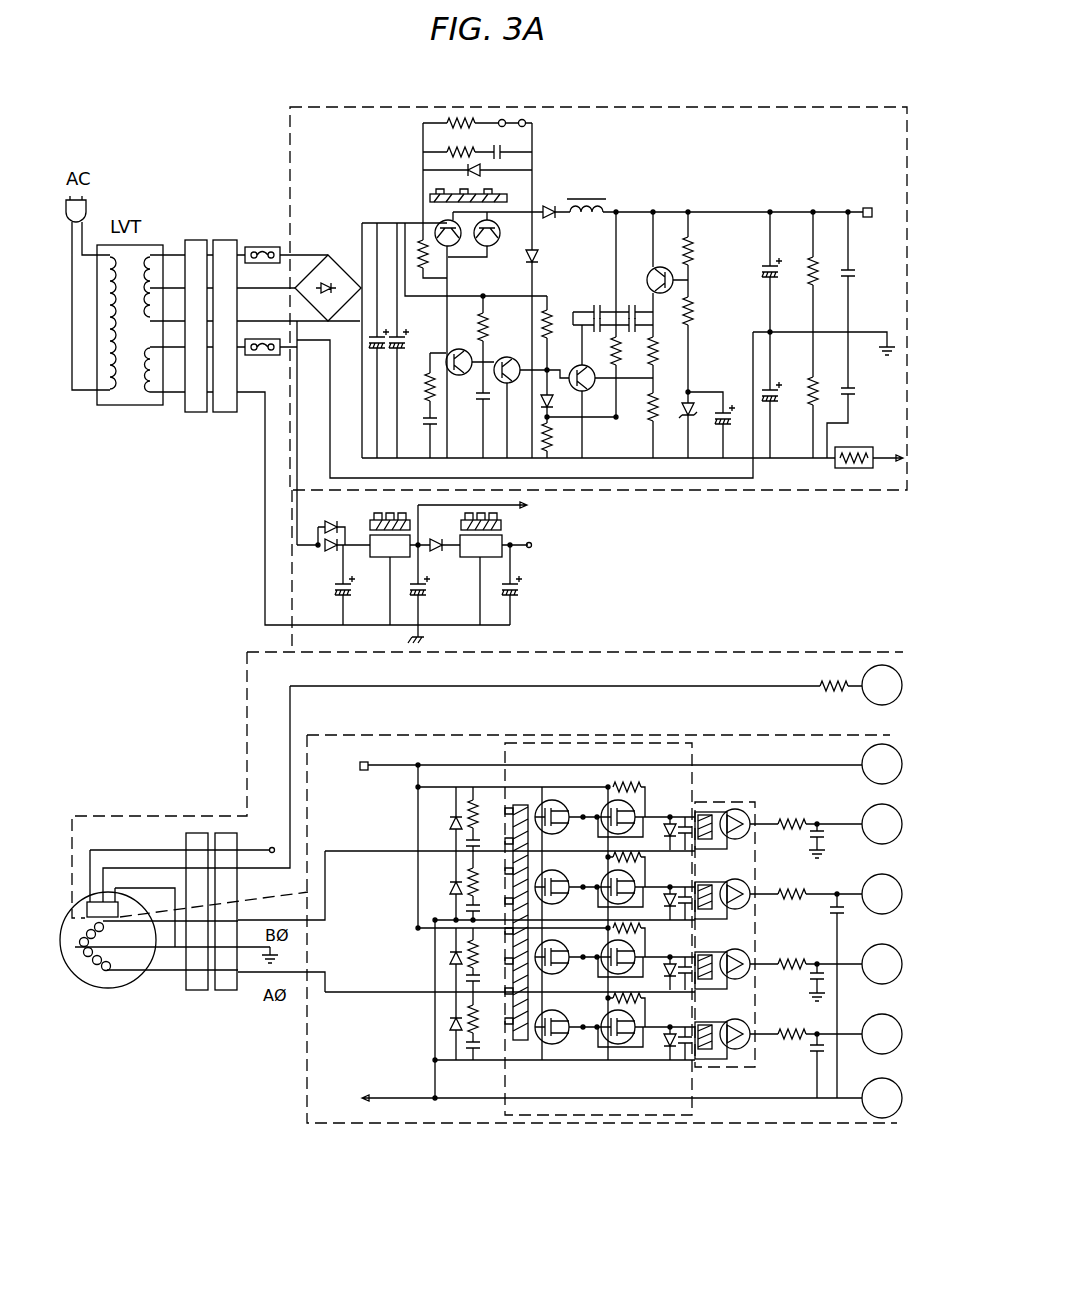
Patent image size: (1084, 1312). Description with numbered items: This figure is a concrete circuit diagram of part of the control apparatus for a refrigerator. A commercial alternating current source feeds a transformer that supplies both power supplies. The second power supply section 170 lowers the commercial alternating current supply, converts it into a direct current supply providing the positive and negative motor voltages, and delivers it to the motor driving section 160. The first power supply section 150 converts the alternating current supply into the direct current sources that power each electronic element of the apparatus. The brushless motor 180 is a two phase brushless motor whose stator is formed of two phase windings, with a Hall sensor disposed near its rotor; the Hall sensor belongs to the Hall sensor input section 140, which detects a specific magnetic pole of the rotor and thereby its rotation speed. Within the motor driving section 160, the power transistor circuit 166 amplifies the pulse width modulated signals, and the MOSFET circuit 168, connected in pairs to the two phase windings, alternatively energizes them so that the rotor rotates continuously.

The second power supply section 170 is at (291, 152).
The first power supply section 150 is at (292, 587).
The Hall sensor input section 140 is at (245, 737).
The brushless motor 180 is at (115, 988).
The motor driving section 160 is at (558, 956).
The power transistor circuit 166 is at (757, 816).
The MOSFET circuit 168 is at (703, 960).